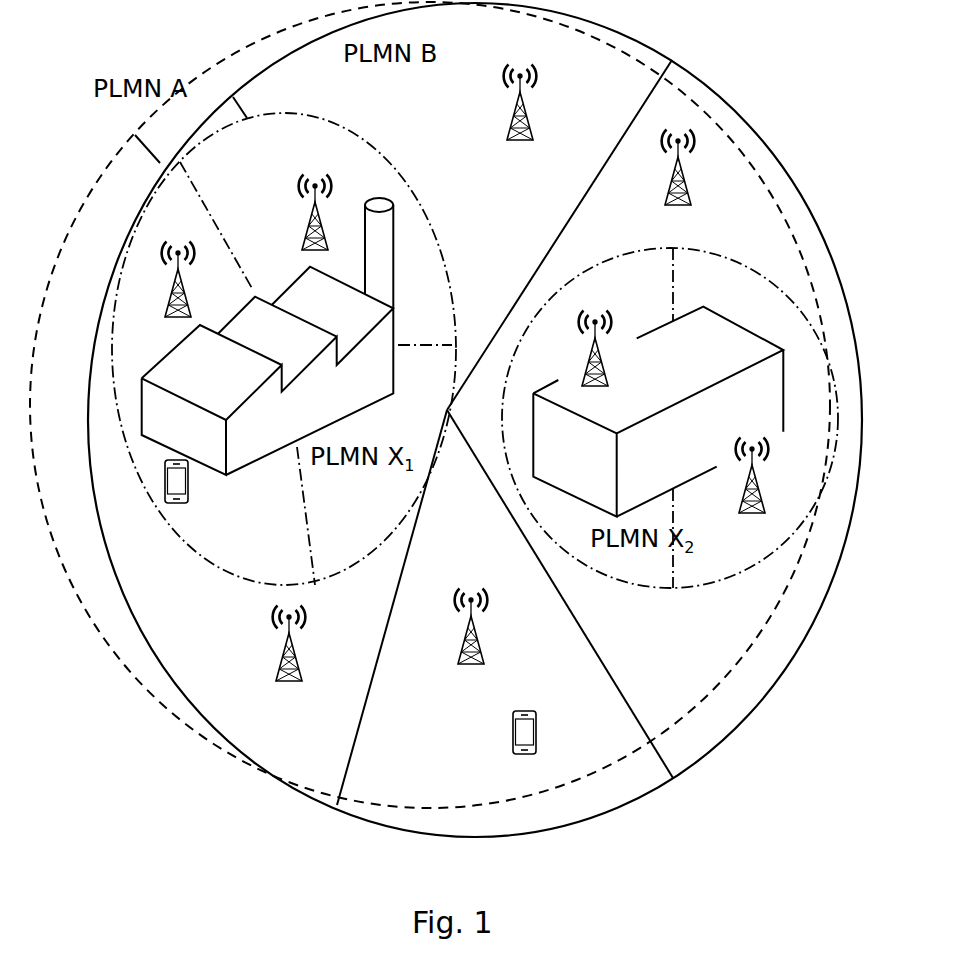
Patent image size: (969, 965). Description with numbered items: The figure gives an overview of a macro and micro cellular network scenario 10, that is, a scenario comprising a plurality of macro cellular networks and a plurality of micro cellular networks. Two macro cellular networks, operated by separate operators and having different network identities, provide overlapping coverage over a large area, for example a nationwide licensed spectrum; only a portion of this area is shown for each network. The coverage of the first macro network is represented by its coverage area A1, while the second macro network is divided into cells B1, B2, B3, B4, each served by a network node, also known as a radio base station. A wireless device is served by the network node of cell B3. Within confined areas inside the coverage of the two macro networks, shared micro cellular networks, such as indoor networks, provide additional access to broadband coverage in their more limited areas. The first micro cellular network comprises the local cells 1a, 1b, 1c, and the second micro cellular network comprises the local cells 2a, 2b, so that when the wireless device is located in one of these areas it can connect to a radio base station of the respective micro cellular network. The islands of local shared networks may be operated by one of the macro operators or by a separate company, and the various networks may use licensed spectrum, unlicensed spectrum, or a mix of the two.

The wireless communication system 10 is at (700, 48).
The coverage area of PLMN A A1 is at (430, 405).
The cell B1 of PLMN B B1 is at (452, 235).
The cell B2 of PLMN B B2 is at (560, 481).
The cell B3 is at (395, 607).
The cell B4 of PLMN B B4 is at (291, 675).
The cell 1a of PLMN X1 1a is at (255, 222).
The cell 1b of PLMN X1 1b is at (238, 414).
The cell 1c of PLMN X1 1c is at (402, 427).
The cell 2a of PLMN X2 2a is at (646, 284).
The cell 2b of PLMN X2 2b is at (720, 432).